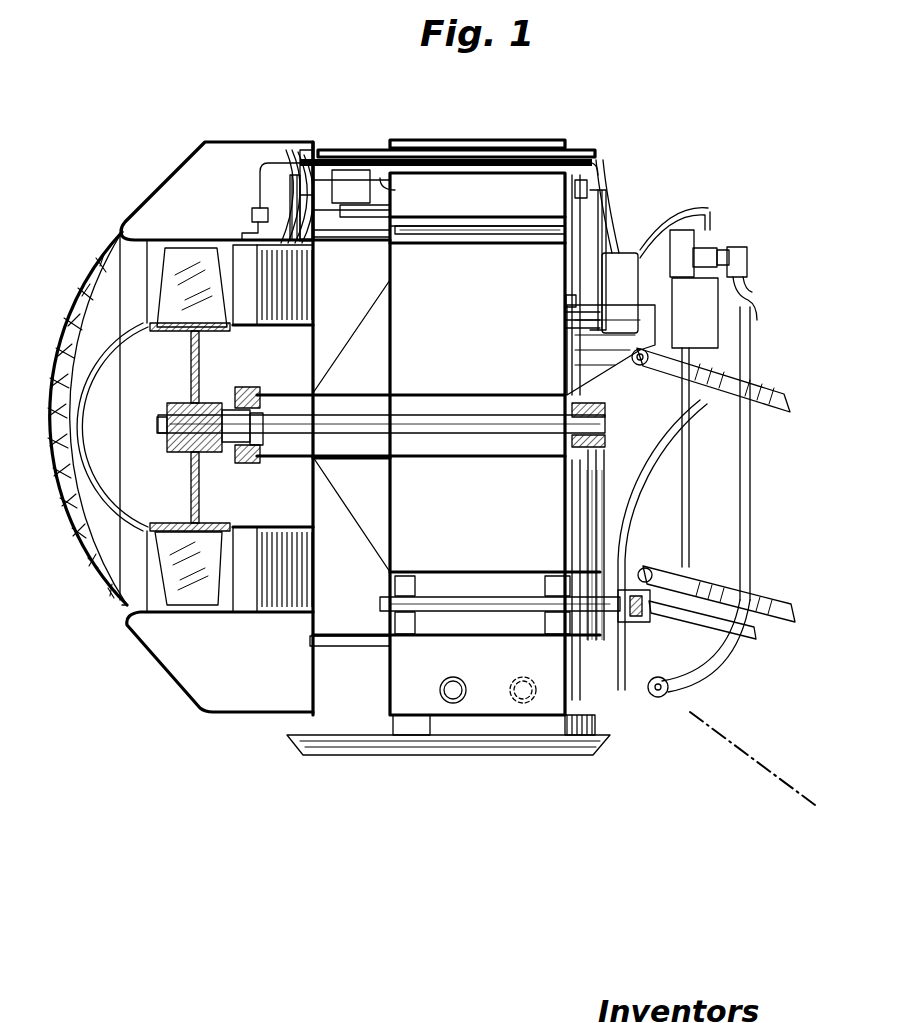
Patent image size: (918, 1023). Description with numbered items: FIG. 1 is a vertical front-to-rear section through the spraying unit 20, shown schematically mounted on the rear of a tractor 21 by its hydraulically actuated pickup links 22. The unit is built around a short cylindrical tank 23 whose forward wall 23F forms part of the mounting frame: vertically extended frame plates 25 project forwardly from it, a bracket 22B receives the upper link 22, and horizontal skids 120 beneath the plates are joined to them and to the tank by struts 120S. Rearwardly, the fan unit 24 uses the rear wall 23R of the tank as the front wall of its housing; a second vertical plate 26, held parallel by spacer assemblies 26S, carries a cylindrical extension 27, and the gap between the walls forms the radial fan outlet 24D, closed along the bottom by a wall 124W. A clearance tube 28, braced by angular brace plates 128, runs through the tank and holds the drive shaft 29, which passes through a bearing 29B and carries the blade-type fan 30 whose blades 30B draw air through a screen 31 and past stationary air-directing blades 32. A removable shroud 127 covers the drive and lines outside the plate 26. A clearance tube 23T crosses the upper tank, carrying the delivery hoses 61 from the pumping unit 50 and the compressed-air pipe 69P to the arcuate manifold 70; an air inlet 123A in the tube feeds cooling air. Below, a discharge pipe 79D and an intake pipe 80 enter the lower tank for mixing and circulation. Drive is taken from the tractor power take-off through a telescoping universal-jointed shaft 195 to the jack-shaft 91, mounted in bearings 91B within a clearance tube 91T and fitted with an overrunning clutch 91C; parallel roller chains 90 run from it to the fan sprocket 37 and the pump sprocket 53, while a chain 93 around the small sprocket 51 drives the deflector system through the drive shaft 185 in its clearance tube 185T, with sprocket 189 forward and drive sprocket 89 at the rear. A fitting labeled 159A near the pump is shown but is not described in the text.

The spraying unit 20 is at (412, 138).
The tractor 21 is at (742, 771).
The pickup links 22 is at (768, 397).
The bracket 22B is at (600, 363).
The tank 23 is at (508, 142).
The clearance tube 23T is at (527, 175).
The rear wall 23R is at (393, 312).
The forward wall 23F is at (562, 282).
The fan unit 24 is at (96, 282).
The fan outlet 24D is at (347, 136).
The frame plates 25 is at (670, 567).
The vertical plate 26 is at (311, 243).
The spacer assemblies 26S is at (360, 215).
The cylindrical extension 27 is at (150, 240).
The clearance tube 28 is at (422, 392).
The drive shaft 29 is at (388, 426).
The bearing 29B is at (238, 460).
The blade-type fan 30 is at (173, 523).
The fan blades 30B is at (178, 290).
The screen 31 is at (92, 580).
The air-directing blades 32 is at (280, 293).
The multiple sprocket 37 is at (600, 409).
The pumping unit 50 is at (620, 293).
The sprocket 51 is at (564, 302).
The multiple sprocket 53 is at (573, 318).
The delivery hoses 61 is at (285, 168).
The pipe 69P is at (262, 164).
The manifold pipe 70 is at (245, 228).
The horizontal discharge portion 79D is at (453, 676).
The intake pipe 80 is at (522, 676).
The drive sprocket 89 is at (291, 243).
The endless roller chains 90 is at (600, 490).
The jack-shaft 91 is at (453, 607).
The clearance tube 91T is at (468, 572).
The bearings 91B is at (553, 586).
The overrunning clutch 91C is at (614, 627).
The endless chain 93 is at (606, 232).
The skids 120 is at (300, 742).
The struts 120S is at (413, 723).
The air inlet 123A is at (380, 178).
The wall 124W is at (322, 710).
The removable shroud 127 is at (178, 168).
The angular brace plates 128 is at (582, 188).
The pipe 159A is at (672, 222).
The drive shaft 185 is at (428, 232).
The clearance tube 185T is at (470, 246).
The drive sprocket 189 is at (600, 222).
The drive shaft 195 is at (743, 636).